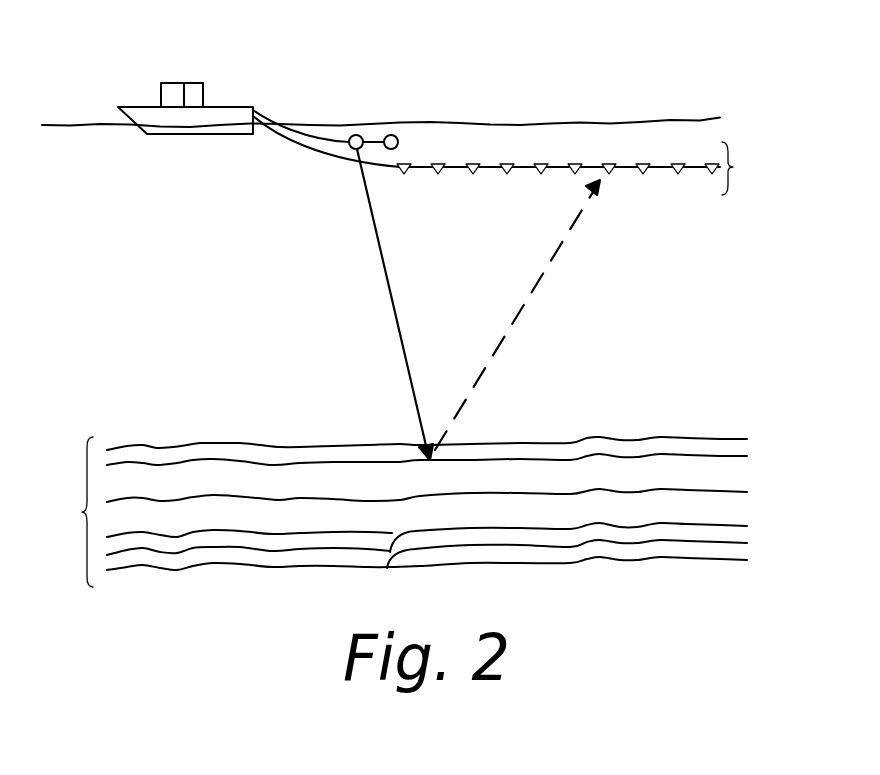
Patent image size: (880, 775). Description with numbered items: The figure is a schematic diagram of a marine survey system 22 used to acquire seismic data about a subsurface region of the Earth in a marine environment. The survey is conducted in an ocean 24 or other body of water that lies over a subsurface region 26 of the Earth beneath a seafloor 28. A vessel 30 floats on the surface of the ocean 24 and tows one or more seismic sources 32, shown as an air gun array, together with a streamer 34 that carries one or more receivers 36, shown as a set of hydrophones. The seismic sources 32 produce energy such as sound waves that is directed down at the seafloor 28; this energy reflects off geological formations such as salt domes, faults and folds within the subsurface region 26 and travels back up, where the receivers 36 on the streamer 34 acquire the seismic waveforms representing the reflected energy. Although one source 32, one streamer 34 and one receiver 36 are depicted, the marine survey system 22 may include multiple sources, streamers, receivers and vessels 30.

The marine survey system 22 is at (646, 48).
The ocean 24 is at (291, 300).
The subsurface region 26 is at (401, 512).
The seafloor 28 is at (197, 445).
The vessel 30 is at (190, 83).
The seismic source 32 is at (357, 135).
The streamer 34 is at (506, 155).
The receiver 36 is at (438, 175).